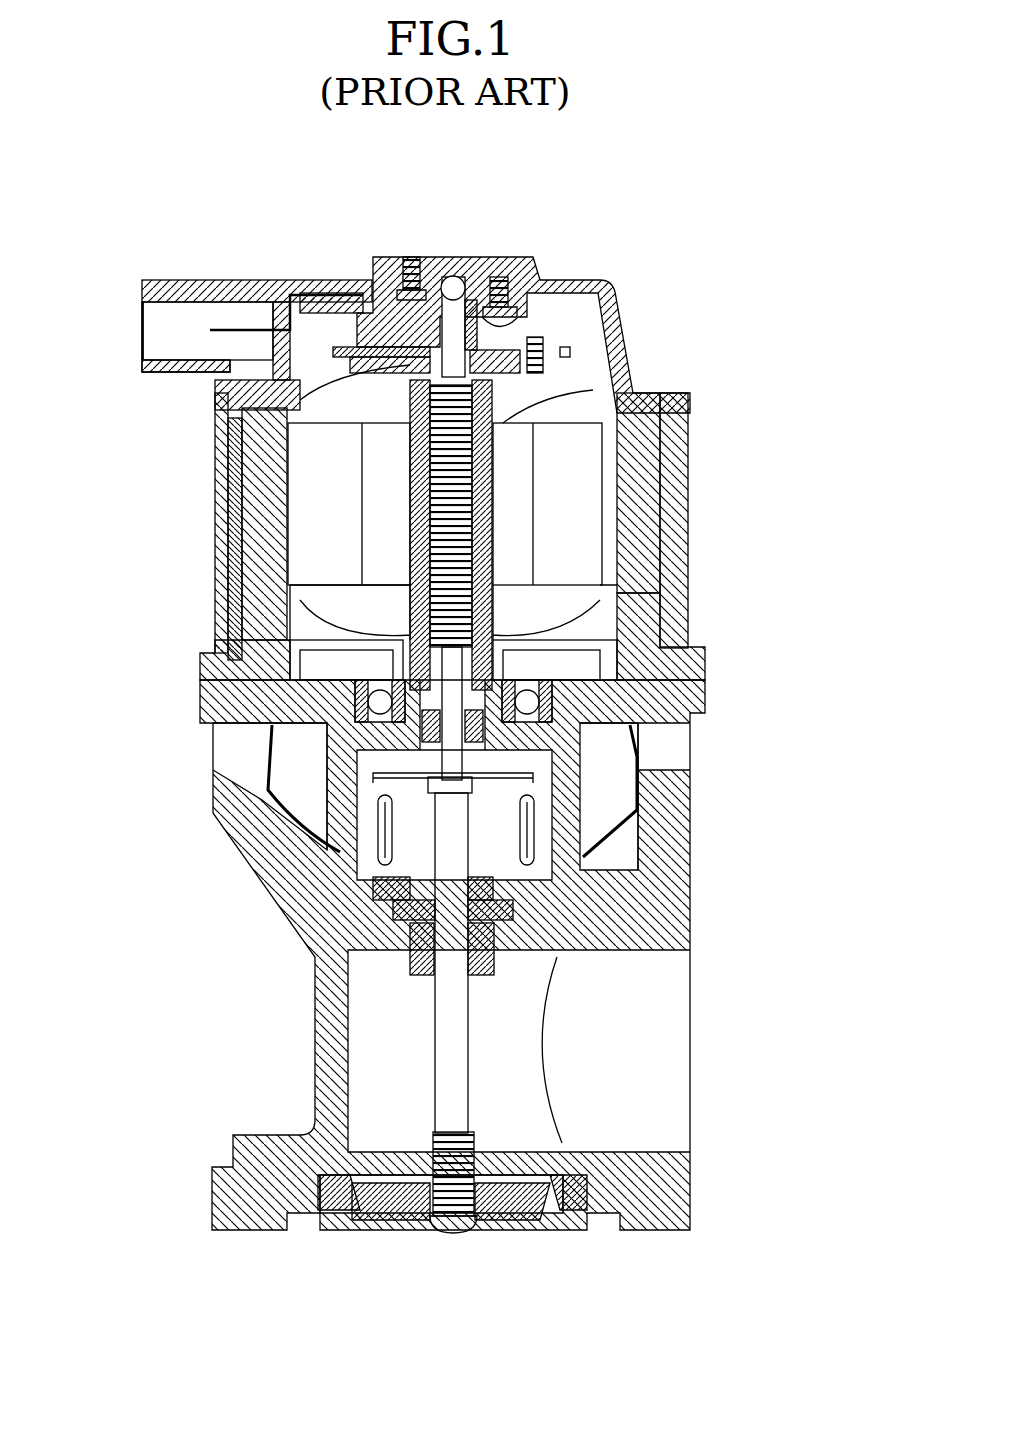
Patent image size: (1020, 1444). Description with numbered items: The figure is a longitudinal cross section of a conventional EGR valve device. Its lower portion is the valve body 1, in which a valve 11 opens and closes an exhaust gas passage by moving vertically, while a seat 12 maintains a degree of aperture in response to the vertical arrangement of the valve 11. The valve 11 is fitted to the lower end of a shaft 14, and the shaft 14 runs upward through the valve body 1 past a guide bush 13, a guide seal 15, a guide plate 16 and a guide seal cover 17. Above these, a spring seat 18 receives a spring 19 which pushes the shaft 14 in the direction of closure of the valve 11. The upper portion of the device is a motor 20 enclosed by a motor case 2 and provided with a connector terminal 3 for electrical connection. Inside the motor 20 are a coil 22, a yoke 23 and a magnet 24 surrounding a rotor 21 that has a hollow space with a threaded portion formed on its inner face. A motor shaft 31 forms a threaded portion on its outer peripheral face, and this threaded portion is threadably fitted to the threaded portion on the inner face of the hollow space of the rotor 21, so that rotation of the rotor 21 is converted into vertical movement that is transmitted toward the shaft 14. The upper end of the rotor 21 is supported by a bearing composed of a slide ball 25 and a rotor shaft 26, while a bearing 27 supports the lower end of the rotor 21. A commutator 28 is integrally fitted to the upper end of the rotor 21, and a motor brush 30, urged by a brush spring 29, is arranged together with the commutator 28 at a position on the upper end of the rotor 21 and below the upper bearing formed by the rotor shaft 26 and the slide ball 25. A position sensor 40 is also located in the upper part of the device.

The valve body 1 is at (643, 837).
The motor case 2 is at (180, 283).
The connector terminal 3 is at (210, 327).
The valve 11 is at (380, 1215).
The seat 12 is at (572, 1195).
The guide bush 13 is at (600, 735).
The shaft 14 is at (460, 1088).
The guide seal 15 is at (590, 945).
The guide plate 16 is at (573, 887).
The guide seal cover 17 is at (420, 990).
The spring seat 18 is at (337, 763).
The spring 19 is at (380, 850).
The motor 20 is at (597, 373).
The rotor 21 is at (600, 413).
The coil 22 is at (573, 473).
The yoke 23 is at (234, 477).
The magnet 24 is at (274, 560).
The slide ball 25 is at (457, 280).
The rotor shaft 26 is at (482, 285).
The bearing 27 is at (630, 695).
The commutator 28 is at (350, 353).
The brush spring 29 is at (397, 295).
The motor brush 30 is at (377, 282).
The motor shaft 31 is at (493, 523).
The position sensor 40 is at (556, 300).